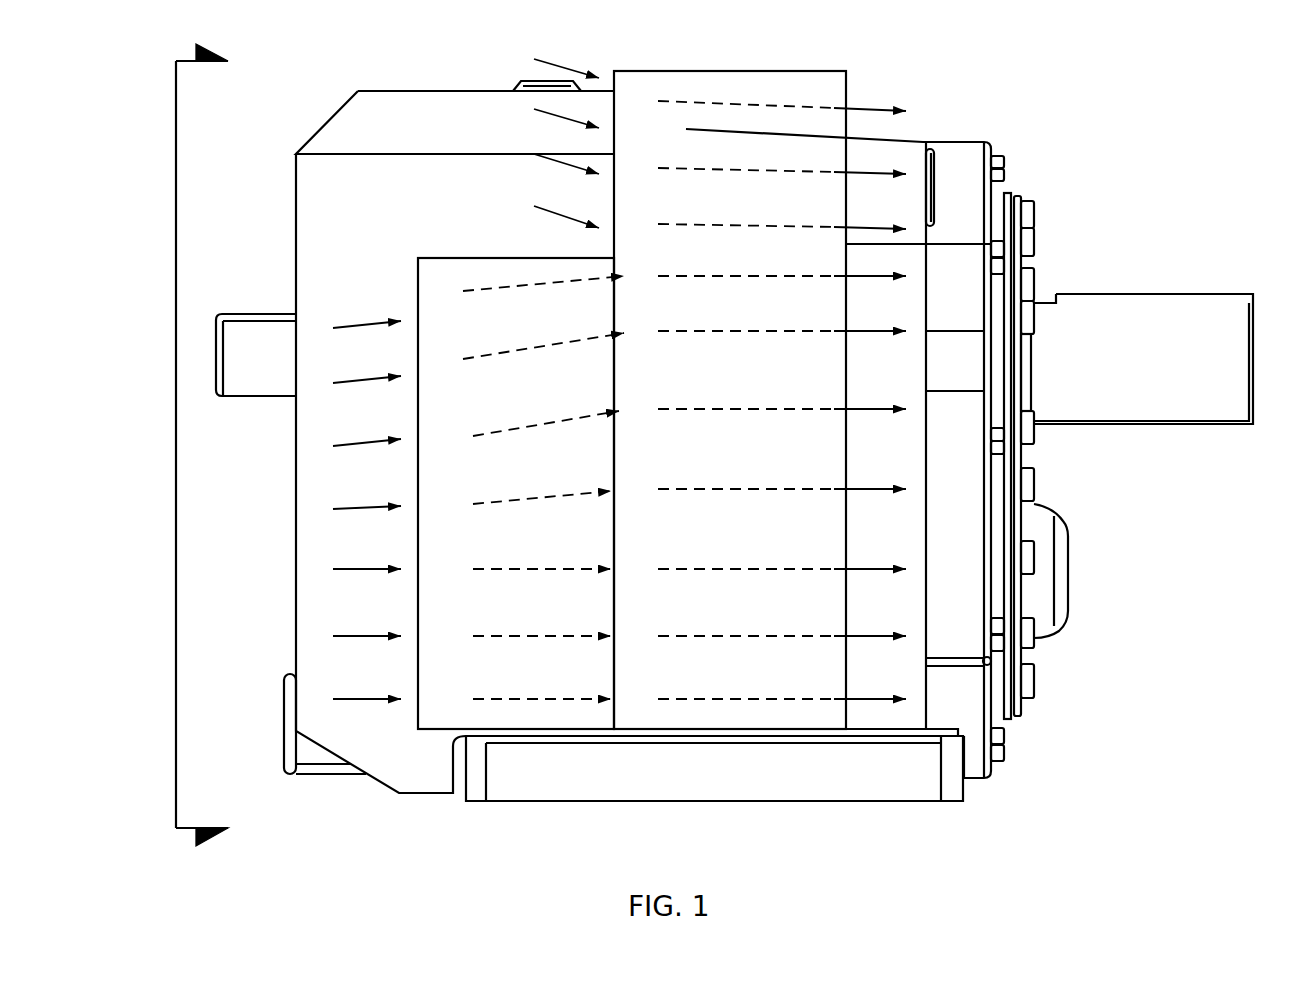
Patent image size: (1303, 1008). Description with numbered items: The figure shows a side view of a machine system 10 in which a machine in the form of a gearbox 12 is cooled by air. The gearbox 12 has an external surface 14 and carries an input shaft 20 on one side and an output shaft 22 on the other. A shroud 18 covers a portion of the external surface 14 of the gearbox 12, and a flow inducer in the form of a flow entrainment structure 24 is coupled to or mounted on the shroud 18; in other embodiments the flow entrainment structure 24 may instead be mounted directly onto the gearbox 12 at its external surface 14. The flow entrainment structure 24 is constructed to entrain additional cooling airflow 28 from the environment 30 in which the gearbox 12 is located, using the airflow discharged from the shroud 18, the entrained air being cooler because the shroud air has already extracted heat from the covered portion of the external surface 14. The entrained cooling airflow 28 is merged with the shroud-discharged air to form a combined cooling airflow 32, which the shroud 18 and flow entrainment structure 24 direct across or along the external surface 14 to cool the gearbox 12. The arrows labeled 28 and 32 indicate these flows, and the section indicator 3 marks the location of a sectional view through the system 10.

The section line 3- 3 is at (188, 448).
The machine system 10 is at (1141, 66).
The gearbox 12 is at (985, 141).
The external surface 14 is at (915, 141).
The shroud 18 is at (371, 90).
The input shaft 20 is at (262, 395).
The output shaft 22 is at (1178, 313).
The flow entrainment structure 24 is at (640, 70).
The additional cooling airflow 28 is at (548, 58).
The environment 30 is at (814, 43).
The combined cooling airflow 32 is at (795, 168).